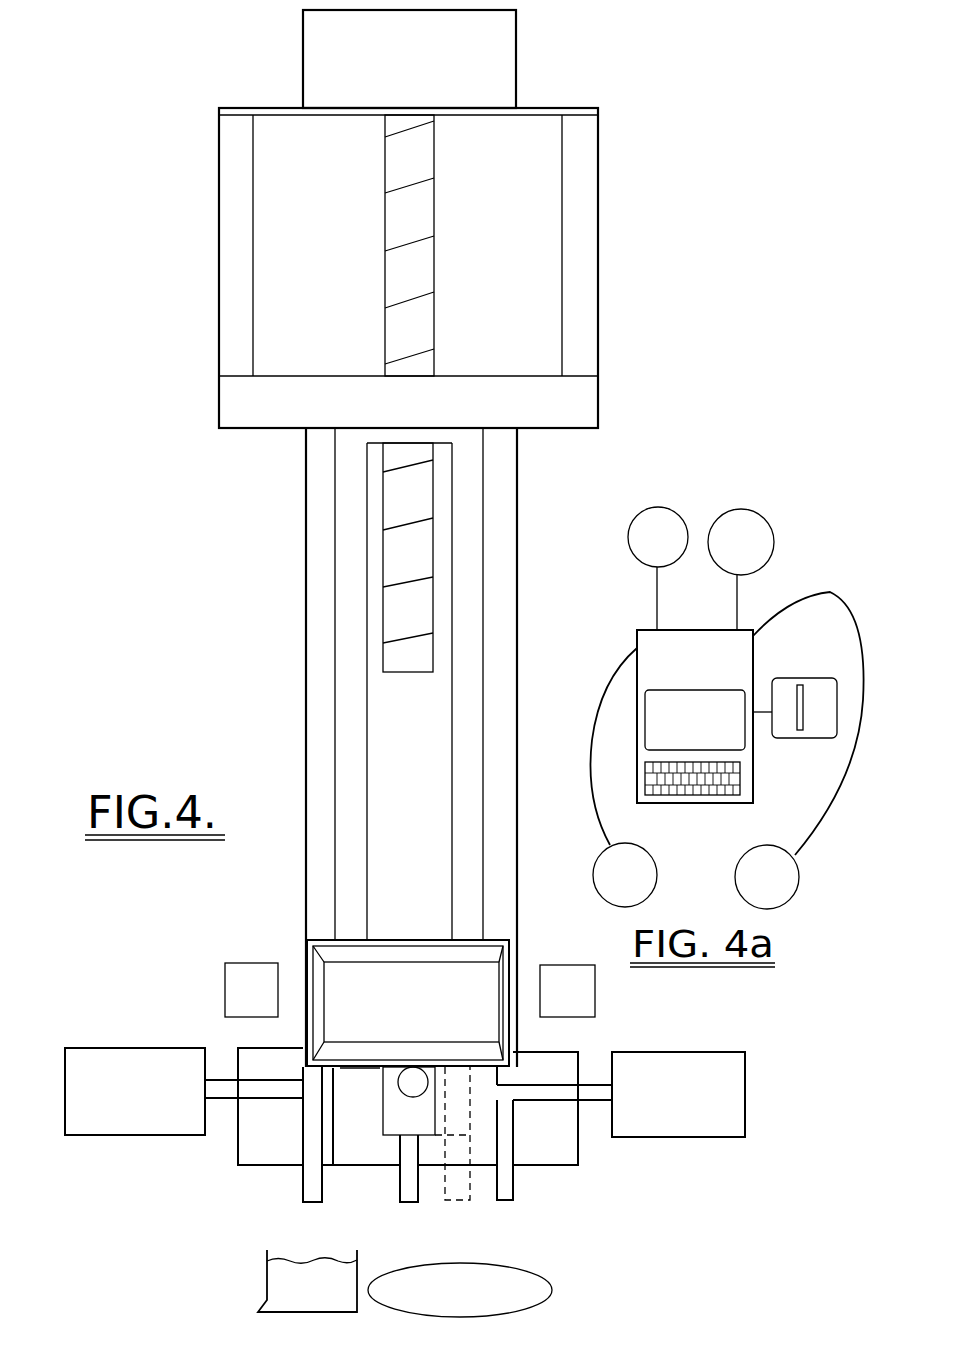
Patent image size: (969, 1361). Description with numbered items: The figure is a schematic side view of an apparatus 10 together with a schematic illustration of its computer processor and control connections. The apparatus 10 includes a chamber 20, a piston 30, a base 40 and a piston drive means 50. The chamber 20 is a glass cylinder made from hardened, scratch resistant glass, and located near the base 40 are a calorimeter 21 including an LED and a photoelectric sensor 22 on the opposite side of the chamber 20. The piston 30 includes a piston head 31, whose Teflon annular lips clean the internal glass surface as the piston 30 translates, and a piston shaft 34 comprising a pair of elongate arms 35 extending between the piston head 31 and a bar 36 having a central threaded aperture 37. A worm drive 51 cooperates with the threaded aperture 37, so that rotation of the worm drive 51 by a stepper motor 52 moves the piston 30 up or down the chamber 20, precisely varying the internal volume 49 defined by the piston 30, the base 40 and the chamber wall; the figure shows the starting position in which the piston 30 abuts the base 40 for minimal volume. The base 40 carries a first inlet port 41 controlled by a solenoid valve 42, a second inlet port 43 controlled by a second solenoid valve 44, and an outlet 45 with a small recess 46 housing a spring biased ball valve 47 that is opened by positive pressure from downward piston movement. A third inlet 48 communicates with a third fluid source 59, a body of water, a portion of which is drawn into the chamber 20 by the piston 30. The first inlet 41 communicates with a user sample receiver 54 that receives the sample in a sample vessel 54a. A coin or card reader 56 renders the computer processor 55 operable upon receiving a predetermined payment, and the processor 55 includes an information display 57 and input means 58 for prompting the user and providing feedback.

In FIG. 4, the apparatus 10 is at (130, 409).
In FIG. 4, the chamber 20 is at (306, 666).
In FIG. 4, the calorimeter 21 is at (268, 1005).
In FIG. 4A, the calorimeter 21 is at (741, 542).
In FIG. 4, the photoelectric sensor 22 is at (584, 1005).
In FIG. 4A, the photoelectric sensor 22 is at (716, 556).
In FIG. 4, the piston 30 is at (428, 930).
In FIG. 4, the piston head 31 is at (467, 977).
In FIG. 4, the piston shaft 34 is at (503, 572).
In FIG. 4, the elongate arms 35 is at (467, 640).
In FIG. 4, the bar 36 is at (463, 440).
In FIG. 4, the threaded aperture 37 is at (583, 402).
In FIG. 4, the base 40 is at (563, 1063).
In FIG. 4, the first sample or reagent inlet port 41 is at (312, 1215).
In FIG. 4, the solenoid valve 42 is at (142, 1103).
In FIG. 4A, the solenoid valve 42 is at (645, 891).
In FIG. 4, the second sample or reagent inlet port 43 is at (505, 1213).
In FIG. 4, the second solenoid valve 44 is at (700, 1106).
In FIG. 4A, the second solenoid valve 44 is at (787, 893).
In FIG. 4, the outlet 45 is at (407, 1208).
In FIG. 4, the recess 46 is at (395, 1118).
In FIG. 4, the ball valve 47 is at (417, 1077).
In FIG. 4, the third inlet 48 is at (455, 1212).
In FIG. 4, the internal volume 49 is at (360, 1068).
In FIG. 4, the piston drive means 50 is at (188, 226).
In FIG. 4A, the piston drive means 50 is at (677, 552).
In FIG. 4, the worm drive 51 is at (427, 256).
In FIG. 4, the stepper motor 52 is at (545, 58).
In FIG. 4, the user sample receiver 54 is at (262, 1308).
In FIG. 4, the sample vessel 54a is at (285, 1300).
In FIG. 4A, the computer processor 55 is at (670, 681).
In FIG. 4A, the coin or card reader 56 is at (823, 688).
In FIG. 4A, the information display 57 is at (663, 735).
In FIG. 4A, the input means 58 is at (735, 777).
In FIG. 4, the third fluid source 59 is at (480, 1303).